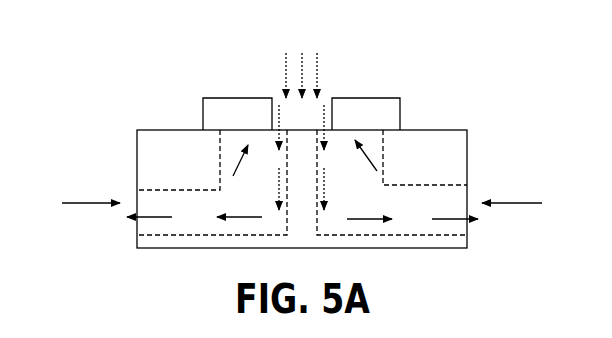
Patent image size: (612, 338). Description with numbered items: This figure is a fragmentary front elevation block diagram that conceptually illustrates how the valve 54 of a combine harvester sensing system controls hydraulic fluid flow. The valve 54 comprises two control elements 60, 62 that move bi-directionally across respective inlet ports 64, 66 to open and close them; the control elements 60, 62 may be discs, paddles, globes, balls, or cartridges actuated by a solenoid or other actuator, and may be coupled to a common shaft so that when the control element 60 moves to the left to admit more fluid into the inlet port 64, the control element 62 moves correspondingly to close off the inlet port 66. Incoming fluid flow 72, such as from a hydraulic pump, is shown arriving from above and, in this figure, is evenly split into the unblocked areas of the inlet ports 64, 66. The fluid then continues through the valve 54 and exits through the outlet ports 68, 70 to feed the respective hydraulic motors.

The valve 54 is at (467, 130).
The control element 60 is at (249, 125).
The control element 62 is at (375, 125).
The inlet port 64 is at (233, 176).
The inlet port 66 is at (377, 171).
The outlet port 68 is at (76, 202).
The outlet port 70 is at (526, 202).
The fluid flow 72 is at (335, 59).